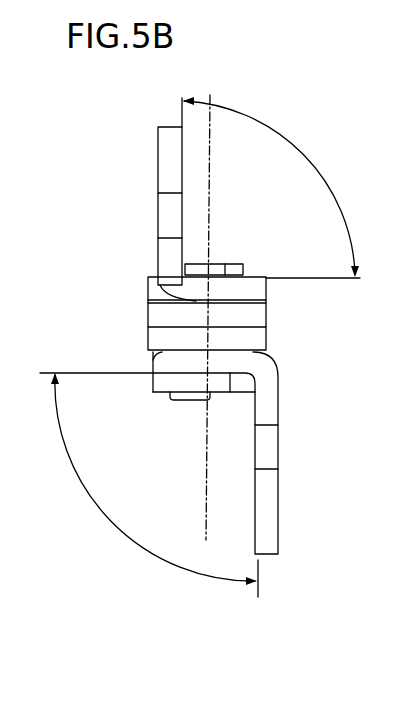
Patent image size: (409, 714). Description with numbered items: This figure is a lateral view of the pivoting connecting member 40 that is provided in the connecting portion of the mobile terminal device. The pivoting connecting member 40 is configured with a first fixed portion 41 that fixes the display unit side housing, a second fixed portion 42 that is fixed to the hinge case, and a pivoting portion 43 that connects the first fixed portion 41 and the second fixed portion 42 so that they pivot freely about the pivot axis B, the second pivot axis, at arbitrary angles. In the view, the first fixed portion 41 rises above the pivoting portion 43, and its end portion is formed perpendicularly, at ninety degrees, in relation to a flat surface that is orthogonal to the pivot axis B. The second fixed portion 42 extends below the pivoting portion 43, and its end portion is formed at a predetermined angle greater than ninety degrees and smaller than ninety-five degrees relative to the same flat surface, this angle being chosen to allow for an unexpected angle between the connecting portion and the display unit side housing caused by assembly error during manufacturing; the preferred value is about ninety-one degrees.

The pivoting connecting member 40 is at (268, 107).
The first fixed portion 41 is at (158, 181).
The second fixed portion 42 is at (281, 497).
The pivoting portion 43 is at (268, 305).